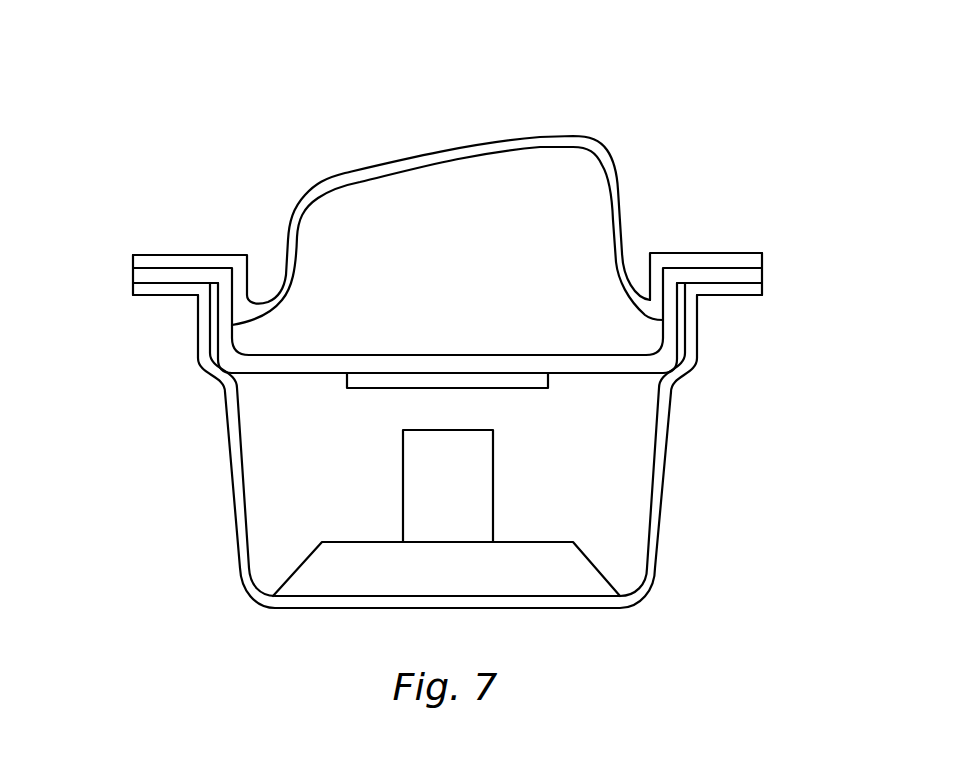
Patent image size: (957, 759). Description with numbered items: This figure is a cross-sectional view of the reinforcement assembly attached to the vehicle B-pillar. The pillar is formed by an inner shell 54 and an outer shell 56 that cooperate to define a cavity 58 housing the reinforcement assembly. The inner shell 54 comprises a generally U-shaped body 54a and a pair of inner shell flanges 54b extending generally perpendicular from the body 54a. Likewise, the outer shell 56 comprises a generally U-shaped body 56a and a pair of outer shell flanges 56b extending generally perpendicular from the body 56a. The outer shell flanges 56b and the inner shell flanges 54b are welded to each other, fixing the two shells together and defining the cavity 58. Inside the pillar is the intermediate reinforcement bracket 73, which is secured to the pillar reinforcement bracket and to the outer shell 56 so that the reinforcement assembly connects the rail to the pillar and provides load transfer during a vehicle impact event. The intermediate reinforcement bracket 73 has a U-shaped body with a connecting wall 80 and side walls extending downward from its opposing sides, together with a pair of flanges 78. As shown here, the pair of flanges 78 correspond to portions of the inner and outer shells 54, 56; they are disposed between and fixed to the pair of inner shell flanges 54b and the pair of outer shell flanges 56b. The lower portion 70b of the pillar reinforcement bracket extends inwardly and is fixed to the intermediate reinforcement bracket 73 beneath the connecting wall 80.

The inner shell 54 is at (210, 433).
The body 54a is at (563, 608).
The inner shell flanges 54b is at (150, 297).
The outer shell 56 is at (262, 183).
The body 56a is at (530, 140).
The outer shell flanges 56b is at (163, 260).
The cavity 58 is at (325, 478).
The lower portion 70b is at (507, 383).
The intermediate reinforcement bracket 73 is at (433, 338).
The flanges 78 is at (147, 273).
The connecting wall 80 is at (593, 362).